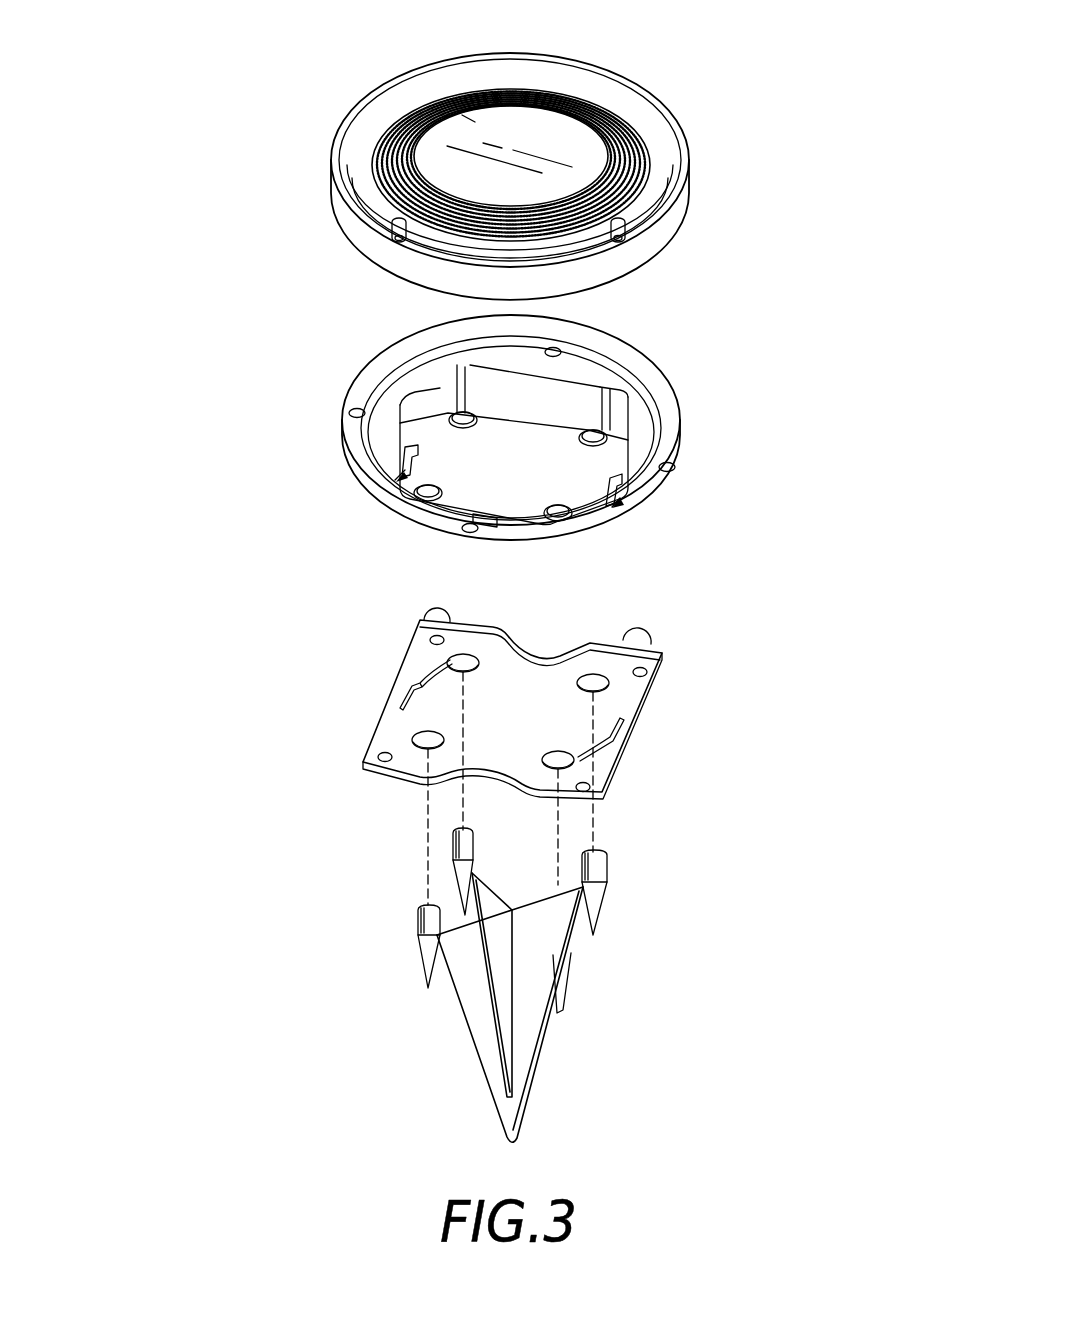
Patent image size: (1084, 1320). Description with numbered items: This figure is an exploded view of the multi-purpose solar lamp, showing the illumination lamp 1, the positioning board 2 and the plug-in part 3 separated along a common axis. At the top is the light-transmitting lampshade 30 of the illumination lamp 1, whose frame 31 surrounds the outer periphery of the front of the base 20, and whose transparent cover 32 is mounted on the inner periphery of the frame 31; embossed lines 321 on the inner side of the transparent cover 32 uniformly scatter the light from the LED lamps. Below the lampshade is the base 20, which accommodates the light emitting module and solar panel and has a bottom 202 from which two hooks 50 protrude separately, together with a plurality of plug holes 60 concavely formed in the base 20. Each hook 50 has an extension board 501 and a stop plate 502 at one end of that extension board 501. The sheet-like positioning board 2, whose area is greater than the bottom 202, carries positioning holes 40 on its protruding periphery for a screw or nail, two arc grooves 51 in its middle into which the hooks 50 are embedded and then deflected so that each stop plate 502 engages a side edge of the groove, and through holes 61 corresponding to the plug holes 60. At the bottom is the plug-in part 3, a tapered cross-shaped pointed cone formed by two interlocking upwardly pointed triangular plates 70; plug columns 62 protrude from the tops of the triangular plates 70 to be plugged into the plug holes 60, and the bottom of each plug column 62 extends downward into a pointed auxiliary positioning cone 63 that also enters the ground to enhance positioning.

The illumination lamp 1 is at (612, 60).
The light-transmitting lampshade 30 is at (511, 150).
The frame 31 is at (680, 143).
The transparent cover 32 is at (457, 120).
The embossed lines 321 is at (375, 148).
The base 20 is at (492, 428).
The bottom 202 is at (545, 437).
The plug holes 60 is at (450, 413).
The hooks 50 is at (485, 503).
The extension board 501 is at (405, 455).
The stop plate 502 is at (485, 512).
The positioning board 2 is at (526, 741).
The positioning holes 40 is at (433, 637).
The through holes 61 is at (463, 655).
The arc grooves 51 is at (413, 685).
The plug columns 62 is at (474, 846).
The auxiliary positioning cone 63 is at (605, 905).
The triangular plates 70 is at (480, 993).
The plug-in part 3 is at (513, 988).